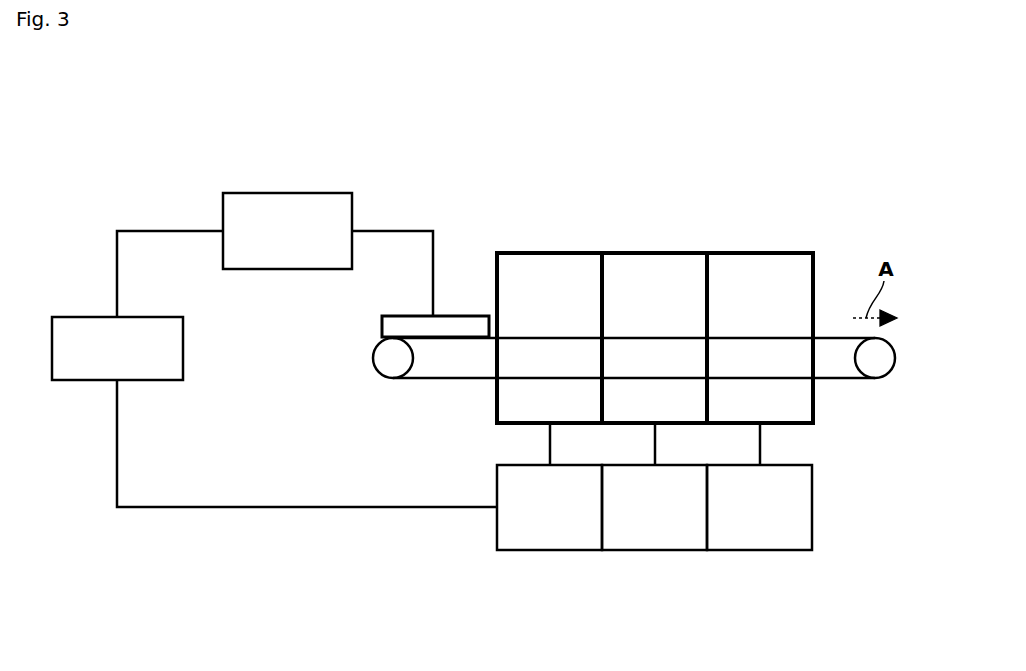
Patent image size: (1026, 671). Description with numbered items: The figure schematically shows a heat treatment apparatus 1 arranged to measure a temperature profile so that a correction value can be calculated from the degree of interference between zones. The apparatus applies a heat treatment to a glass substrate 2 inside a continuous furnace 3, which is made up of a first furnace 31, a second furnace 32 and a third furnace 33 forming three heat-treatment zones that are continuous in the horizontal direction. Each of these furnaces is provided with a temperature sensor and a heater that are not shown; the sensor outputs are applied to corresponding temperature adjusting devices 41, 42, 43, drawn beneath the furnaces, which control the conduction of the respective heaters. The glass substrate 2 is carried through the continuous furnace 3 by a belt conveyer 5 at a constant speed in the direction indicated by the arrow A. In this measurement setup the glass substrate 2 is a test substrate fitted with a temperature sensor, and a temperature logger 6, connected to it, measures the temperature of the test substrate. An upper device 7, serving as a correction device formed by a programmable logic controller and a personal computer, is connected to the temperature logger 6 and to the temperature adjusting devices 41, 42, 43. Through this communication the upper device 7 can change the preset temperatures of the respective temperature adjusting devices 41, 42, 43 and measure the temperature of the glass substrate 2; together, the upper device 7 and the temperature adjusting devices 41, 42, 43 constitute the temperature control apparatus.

The heat treatment apparatus 1 is at (836, 154).
The glass substrate 2 is at (462, 316).
The continuous furnace 3 is at (527, 167).
The first furnace 31 is at (543, 253).
The second furnace 32 is at (647, 253).
The third furnace 33 is at (752, 253).
The temperature adjusting device 41 is at (549, 550).
The temperature adjusting device 42 is at (654, 550).
The temperature adjusting device 43 is at (759, 550).
The belt conveyer 5 is at (446, 380).
The temperature logger 6 is at (285, 193).
The upper device 7 is at (81, 380).